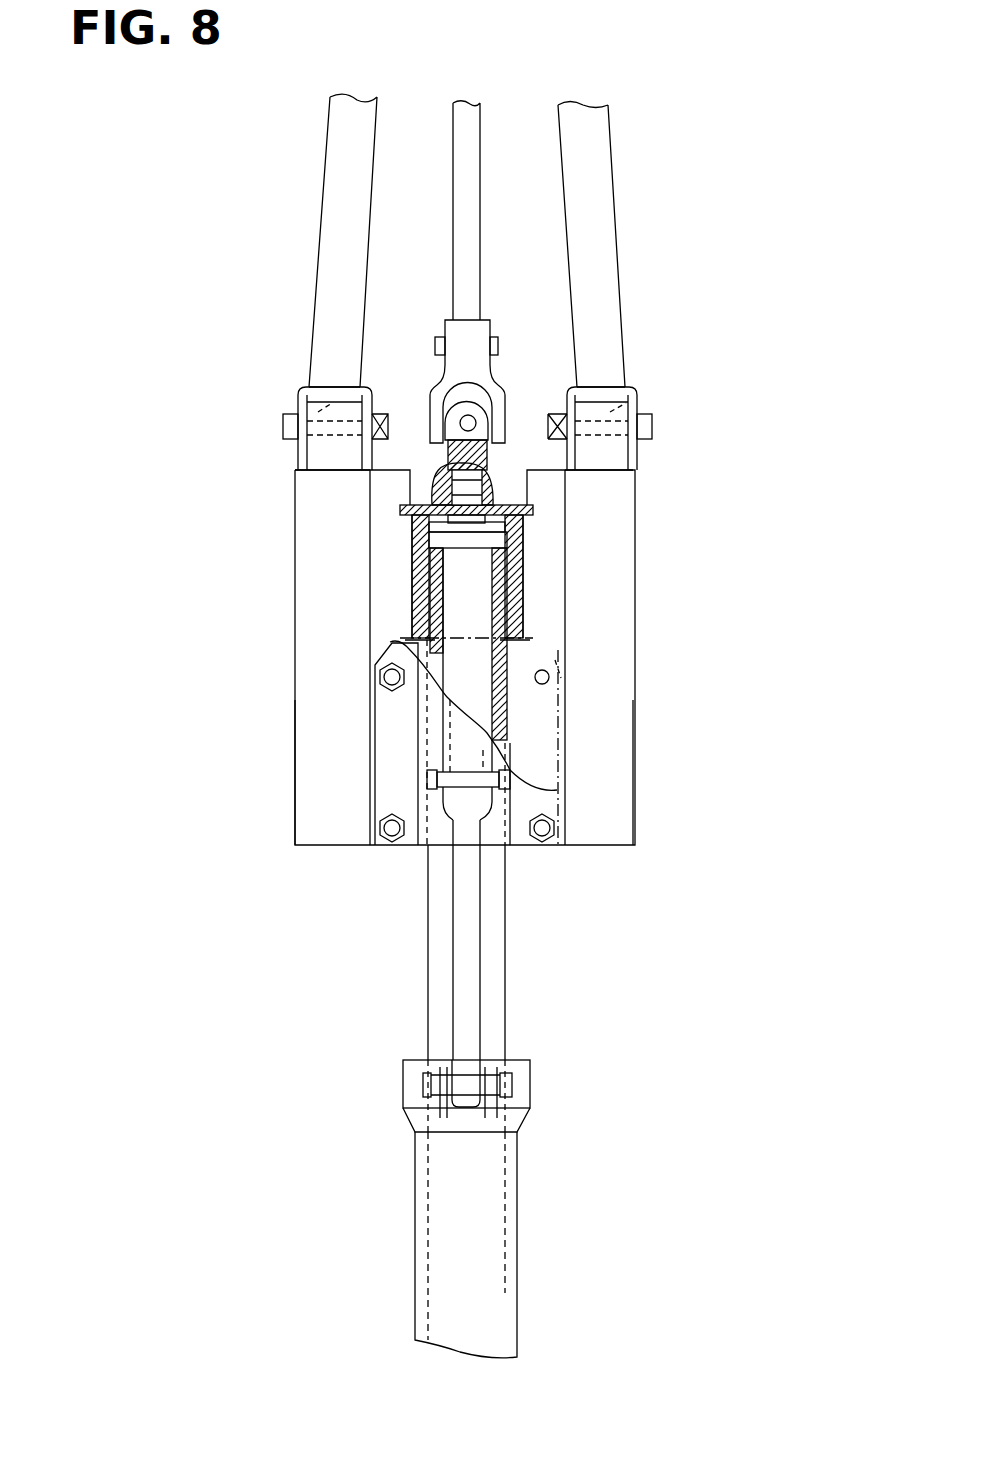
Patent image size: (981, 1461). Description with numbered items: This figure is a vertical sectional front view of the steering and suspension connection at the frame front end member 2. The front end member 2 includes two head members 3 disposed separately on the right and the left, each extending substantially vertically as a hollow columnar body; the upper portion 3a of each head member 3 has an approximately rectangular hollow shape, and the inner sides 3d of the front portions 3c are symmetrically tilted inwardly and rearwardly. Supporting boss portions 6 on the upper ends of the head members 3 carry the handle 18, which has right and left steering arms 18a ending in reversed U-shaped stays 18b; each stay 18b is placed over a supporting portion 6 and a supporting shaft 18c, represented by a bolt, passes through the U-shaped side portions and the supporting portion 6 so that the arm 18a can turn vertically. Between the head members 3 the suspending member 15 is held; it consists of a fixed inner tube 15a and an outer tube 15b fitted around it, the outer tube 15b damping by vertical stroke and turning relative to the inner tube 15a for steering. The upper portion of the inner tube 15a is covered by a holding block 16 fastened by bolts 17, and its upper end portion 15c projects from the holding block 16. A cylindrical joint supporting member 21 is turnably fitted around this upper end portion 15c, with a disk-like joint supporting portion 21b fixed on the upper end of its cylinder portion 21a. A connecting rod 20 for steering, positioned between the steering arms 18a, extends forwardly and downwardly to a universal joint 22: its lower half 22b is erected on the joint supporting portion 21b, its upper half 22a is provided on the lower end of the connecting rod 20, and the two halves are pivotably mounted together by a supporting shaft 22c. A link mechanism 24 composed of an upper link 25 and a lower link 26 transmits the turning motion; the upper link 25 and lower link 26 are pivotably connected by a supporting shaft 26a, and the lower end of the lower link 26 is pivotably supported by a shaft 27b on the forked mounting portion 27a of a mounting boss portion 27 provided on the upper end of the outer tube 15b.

The frame front end member 2 is at (812, 566).
The head member 3 is at (325, 617).
The upper portion 3a is at (330, 515).
The front portion 3c is at (368, 690).
The inner side 3d is at (333, 682).
The supporting boss portion 6 is at (330, 455).
The suspending member 15 is at (533, 1200).
The inner tube 15a is at (510, 708).
The outer tube 15b is at (517, 1300).
The upper end portion 15c is at (537, 612).
The holding block 16 is at (372, 755).
The bolts 17 is at (390, 745).
The handle 18 is at (620, 117).
The steering arm 18a is at (343, 187).
The stay 18b is at (330, 385).
The supporting shaft 18c is at (305, 405).
The connecting rod 20 is at (485, 122).
The joint supporting member 21 is at (400, 540).
The cylinder portion 21a is at (395, 600).
The joint supporting portion 21b is at (530, 505).
The universal joint 22 is at (503, 372).
The upper half 22a is at (440, 455).
The lower half 22b is at (433, 400).
The supporting shaft 22c is at (440, 455).
The link mechanism 24 is at (425, 922).
The upper link 25 is at (513, 748).
The lower link 26 is at (480, 980).
The supporting shaft 26a is at (510, 783).
The mounting boss portion 27 is at (523, 1093).
The forked mounting portion 27a is at (440, 1100).
The shaft 27b is at (420, 1083).